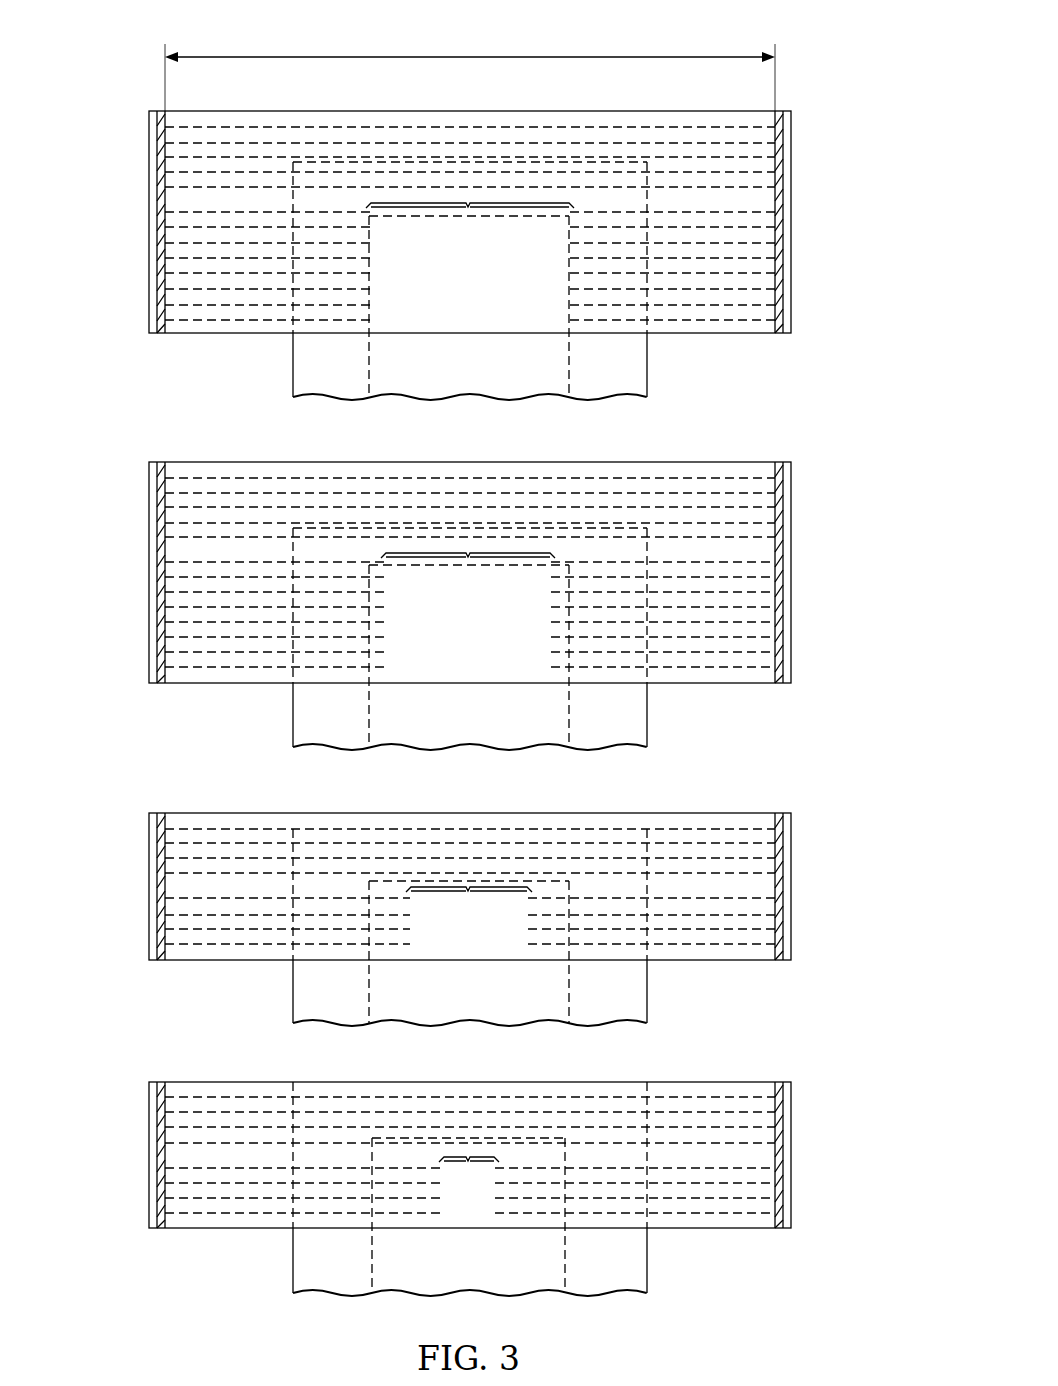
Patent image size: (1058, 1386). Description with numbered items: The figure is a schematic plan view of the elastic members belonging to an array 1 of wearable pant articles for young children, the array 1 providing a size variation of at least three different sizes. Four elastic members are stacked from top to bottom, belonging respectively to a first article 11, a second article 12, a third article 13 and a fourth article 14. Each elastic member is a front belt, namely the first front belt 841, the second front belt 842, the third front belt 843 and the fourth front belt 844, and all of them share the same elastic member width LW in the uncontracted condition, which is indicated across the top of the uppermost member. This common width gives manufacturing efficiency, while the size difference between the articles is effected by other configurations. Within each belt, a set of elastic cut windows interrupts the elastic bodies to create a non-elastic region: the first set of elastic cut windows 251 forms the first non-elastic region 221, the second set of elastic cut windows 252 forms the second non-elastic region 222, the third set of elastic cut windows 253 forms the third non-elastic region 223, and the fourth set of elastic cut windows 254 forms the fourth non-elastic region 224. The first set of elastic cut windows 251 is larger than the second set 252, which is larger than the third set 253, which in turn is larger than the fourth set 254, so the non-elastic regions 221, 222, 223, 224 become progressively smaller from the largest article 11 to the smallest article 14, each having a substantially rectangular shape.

The array of wearable articles 1 is at (106, 46).
The first article 11 is at (828, 204).
The second article 12 is at (828, 552).
The third article 13 is at (828, 867).
The fourth article 14 is at (828, 1135).
The first non-elastic region 221 is at (468, 203).
The second non-elastic region 222 is at (468, 553).
The third non-elastic region 223 is at (468, 887).
The fourth non-elastic region 224 is at (468, 1157).
The first set of elastic cut windows 251 is at (487, 288).
The second set of elastic cut windows 252 is at (487, 637).
The third set of elastic cut windows 253 is at (487, 937).
The fourth set of elastic cut windows 254 is at (487, 1207).
The first front belt 841 is at (720, 336).
The second front belt 842 is at (720, 686).
The third front belt 843 is at (720, 963).
The fourth front belt 844 is at (720, 1231).